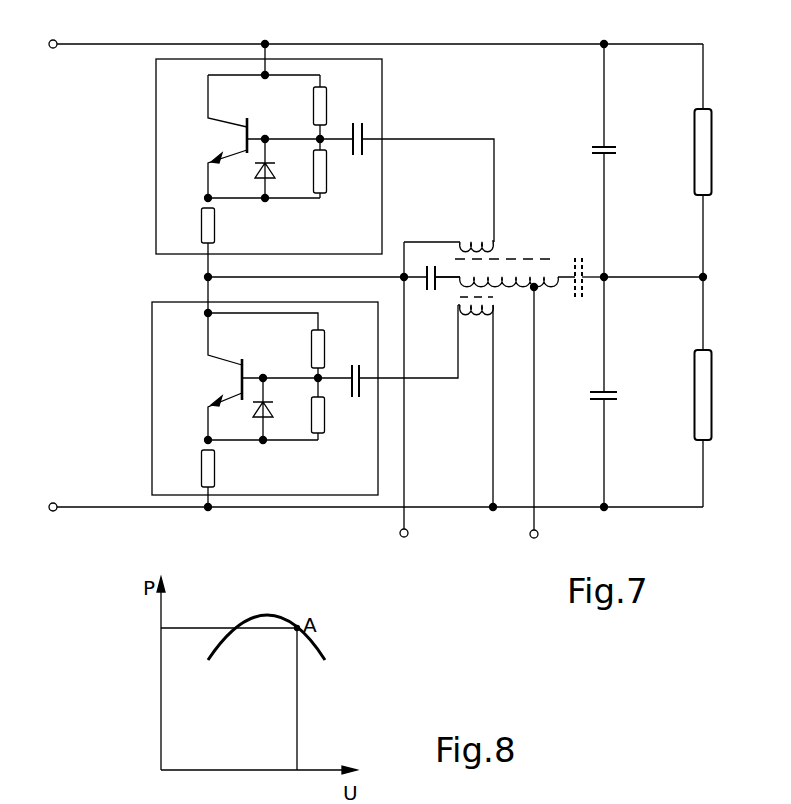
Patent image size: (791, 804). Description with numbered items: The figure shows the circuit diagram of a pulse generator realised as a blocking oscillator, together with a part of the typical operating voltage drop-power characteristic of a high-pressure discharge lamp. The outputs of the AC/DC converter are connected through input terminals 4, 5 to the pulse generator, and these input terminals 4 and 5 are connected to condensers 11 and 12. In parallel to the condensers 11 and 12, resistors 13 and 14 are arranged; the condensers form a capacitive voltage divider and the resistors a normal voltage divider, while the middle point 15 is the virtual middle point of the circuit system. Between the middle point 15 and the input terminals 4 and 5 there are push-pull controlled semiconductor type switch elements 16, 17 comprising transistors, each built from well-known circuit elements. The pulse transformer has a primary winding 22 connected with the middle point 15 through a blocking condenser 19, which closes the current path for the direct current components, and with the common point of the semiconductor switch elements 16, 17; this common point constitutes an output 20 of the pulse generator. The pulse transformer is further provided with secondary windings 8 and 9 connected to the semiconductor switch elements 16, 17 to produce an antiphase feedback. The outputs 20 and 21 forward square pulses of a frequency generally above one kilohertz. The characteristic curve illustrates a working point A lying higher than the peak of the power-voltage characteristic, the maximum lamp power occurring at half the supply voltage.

The input terminal 4 is at (375, 30).
The input terminal 5 is at (375, 494).
The secondary winding 8 is at (478, 240).
The secondary winding 9 is at (475, 318).
The condenser 11 is at (590, 150).
The condenser 12 is at (590, 392).
The resistor 13 is at (695, 156).
The resistor 14 is at (695, 386).
The middle point 15 is at (707, 277).
The semiconductor switch element 16 is at (156, 150).
The semiconductor switch element 17 is at (152, 372).
The blocking condenser 19 is at (433, 295).
The output 20 is at (408, 537).
The output 21 is at (530, 538).
The primary winding 22 is at (507, 268).